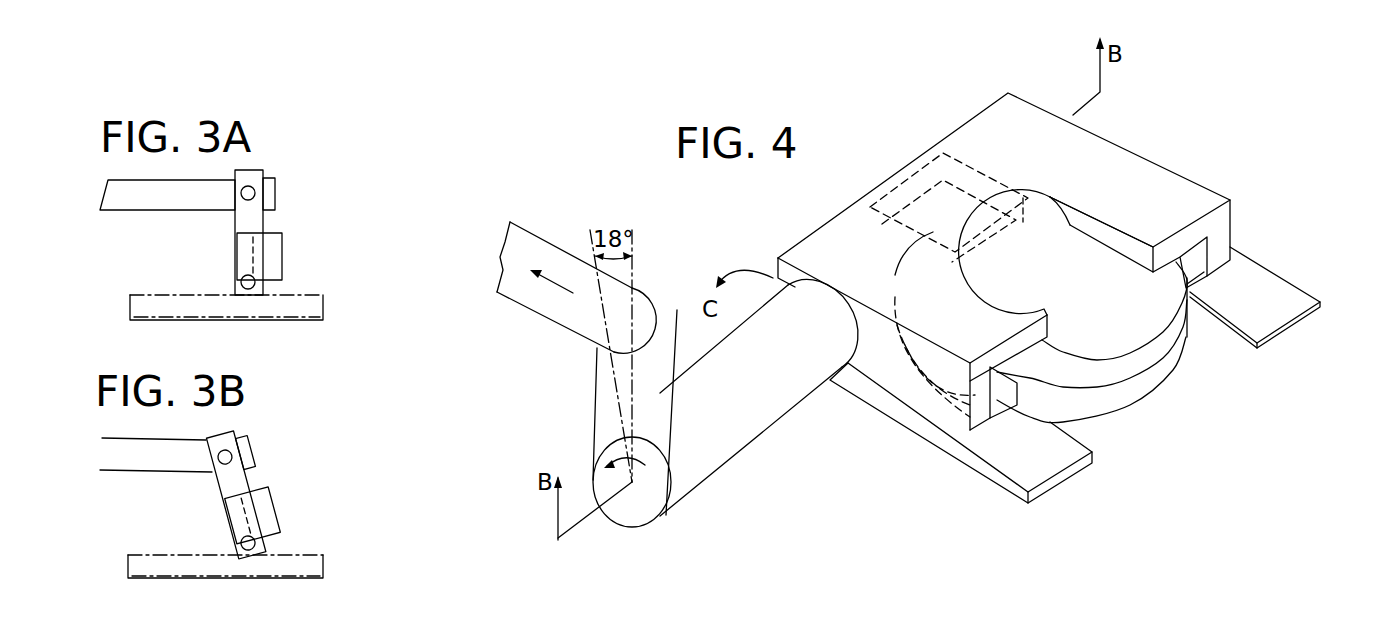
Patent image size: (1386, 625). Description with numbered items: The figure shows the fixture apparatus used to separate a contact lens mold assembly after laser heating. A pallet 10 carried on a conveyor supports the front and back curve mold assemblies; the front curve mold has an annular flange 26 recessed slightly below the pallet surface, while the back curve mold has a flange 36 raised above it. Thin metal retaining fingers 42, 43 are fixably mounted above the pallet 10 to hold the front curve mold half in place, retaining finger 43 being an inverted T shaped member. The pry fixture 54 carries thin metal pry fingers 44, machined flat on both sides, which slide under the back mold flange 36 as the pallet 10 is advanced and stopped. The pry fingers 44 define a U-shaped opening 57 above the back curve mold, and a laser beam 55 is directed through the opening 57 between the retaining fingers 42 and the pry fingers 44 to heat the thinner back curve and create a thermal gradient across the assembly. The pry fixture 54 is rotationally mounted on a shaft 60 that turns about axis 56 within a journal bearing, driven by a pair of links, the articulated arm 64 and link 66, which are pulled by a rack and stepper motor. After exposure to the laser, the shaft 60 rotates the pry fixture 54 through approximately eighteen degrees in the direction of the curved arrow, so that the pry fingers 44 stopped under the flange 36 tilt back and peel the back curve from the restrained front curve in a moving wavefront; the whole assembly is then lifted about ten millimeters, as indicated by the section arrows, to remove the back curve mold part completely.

In FIG. 3A, the pallet 10 is at (307, 300).
In FIG. 3B, the pallet 10 is at (313, 560).
In FIG. 4, the flange 26 is at (1140, 425).
In FIG. 4, the flange 36 is at (1160, 366).
In FIG. 4, the retaining finger 42 is at (1017, 500).
In FIG. 4, the retaining finger 43 is at (1283, 335).
In FIG. 4, the pry fingers 44 is at (1017, 397).
In FIG. 3A, the pry fixture 54 is at (267, 248).
In FIG. 3B, the pry fixture 54 is at (270, 515).
In FIG. 4, the pry fixture 54 is at (908, 145).
In FIG. 4, the laser beam 55 is at (1052, 258).
In FIG. 4, the axis 56 is at (587, 517).
In FIG. 4, the U-shaped opening 57 is at (1080, 218).
In FIG. 4, the shaft 60 is at (700, 470).
In FIG. 3A, the articulated arm 64 is at (235, 221).
In FIG. 3B, the articulated arm 64 is at (218, 493).
In FIG. 4, the articulated arm 64 is at (595, 403).
In FIG. 3A, the link 66 is at (150, 180).
In FIG. 3B, the link 66 is at (150, 438).
In FIG. 4, the link 66 is at (548, 260).